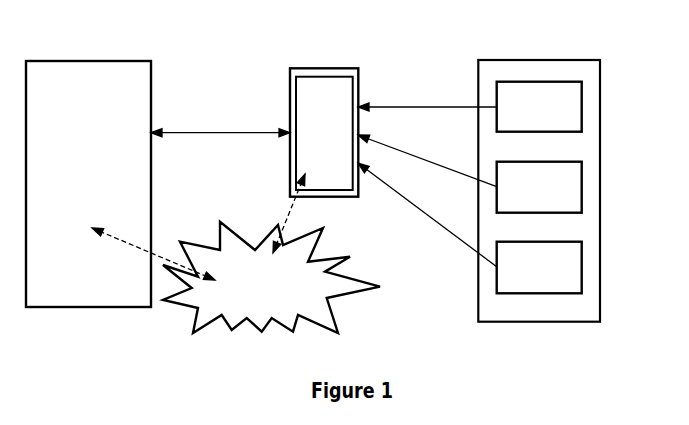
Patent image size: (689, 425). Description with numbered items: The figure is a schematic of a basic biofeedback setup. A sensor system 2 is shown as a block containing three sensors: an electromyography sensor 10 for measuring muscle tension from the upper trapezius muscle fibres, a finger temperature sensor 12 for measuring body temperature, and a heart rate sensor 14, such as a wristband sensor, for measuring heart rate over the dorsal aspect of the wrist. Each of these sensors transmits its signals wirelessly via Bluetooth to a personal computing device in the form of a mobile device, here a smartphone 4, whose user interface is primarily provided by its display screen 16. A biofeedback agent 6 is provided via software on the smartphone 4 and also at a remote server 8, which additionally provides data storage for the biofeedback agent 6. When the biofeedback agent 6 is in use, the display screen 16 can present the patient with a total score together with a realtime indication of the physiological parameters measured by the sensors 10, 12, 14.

The sensor system 2 is at (563, 60).
The smartphone 4 is at (298, 67).
The biofeedback agent 6 is at (248, 298).
The remote server 8 is at (125, 61).
The electromyography sensor 10 is at (582, 107).
The finger temperature sensor 12 is at (582, 187).
The heart rate sensor 14 is at (582, 267).
The display screen 16 is at (342, 76).